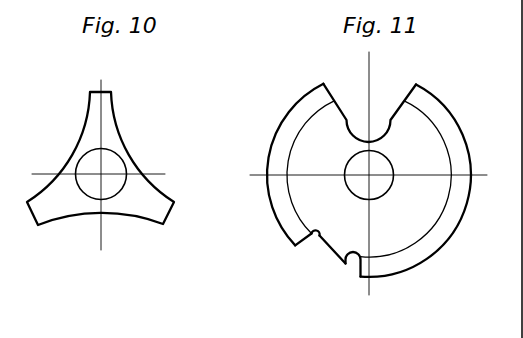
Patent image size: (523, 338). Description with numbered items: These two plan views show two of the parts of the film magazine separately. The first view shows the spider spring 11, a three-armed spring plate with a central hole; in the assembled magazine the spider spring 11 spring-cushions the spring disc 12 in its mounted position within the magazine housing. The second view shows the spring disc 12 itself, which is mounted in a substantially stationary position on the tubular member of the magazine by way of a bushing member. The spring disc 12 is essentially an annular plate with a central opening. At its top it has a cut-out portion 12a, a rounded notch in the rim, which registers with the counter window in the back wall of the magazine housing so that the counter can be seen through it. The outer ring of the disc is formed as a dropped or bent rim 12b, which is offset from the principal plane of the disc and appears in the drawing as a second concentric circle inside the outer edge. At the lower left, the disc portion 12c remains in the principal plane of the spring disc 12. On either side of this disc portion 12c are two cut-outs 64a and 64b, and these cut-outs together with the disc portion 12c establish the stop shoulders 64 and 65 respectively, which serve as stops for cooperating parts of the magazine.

In FIG. 10, the spider spring 11 is at (113, 116).
In FIG. 11, the spring disc 12 is at (437, 106).
In FIG. 11, the cut-out portion 12a is at (383, 93).
In FIG. 11, the dropped rim 12b is at (454, 126).
In FIG. 11, the disc portion 12c is at (332, 266).
In FIG. 11, the stop shoulder 64 is at (341, 256).
In FIG. 11, the cut-out 64a is at (360, 253).
In FIG. 11, the cut-out 64b is at (322, 224).
In FIG. 11, the stop shoulder 65 is at (310, 251).